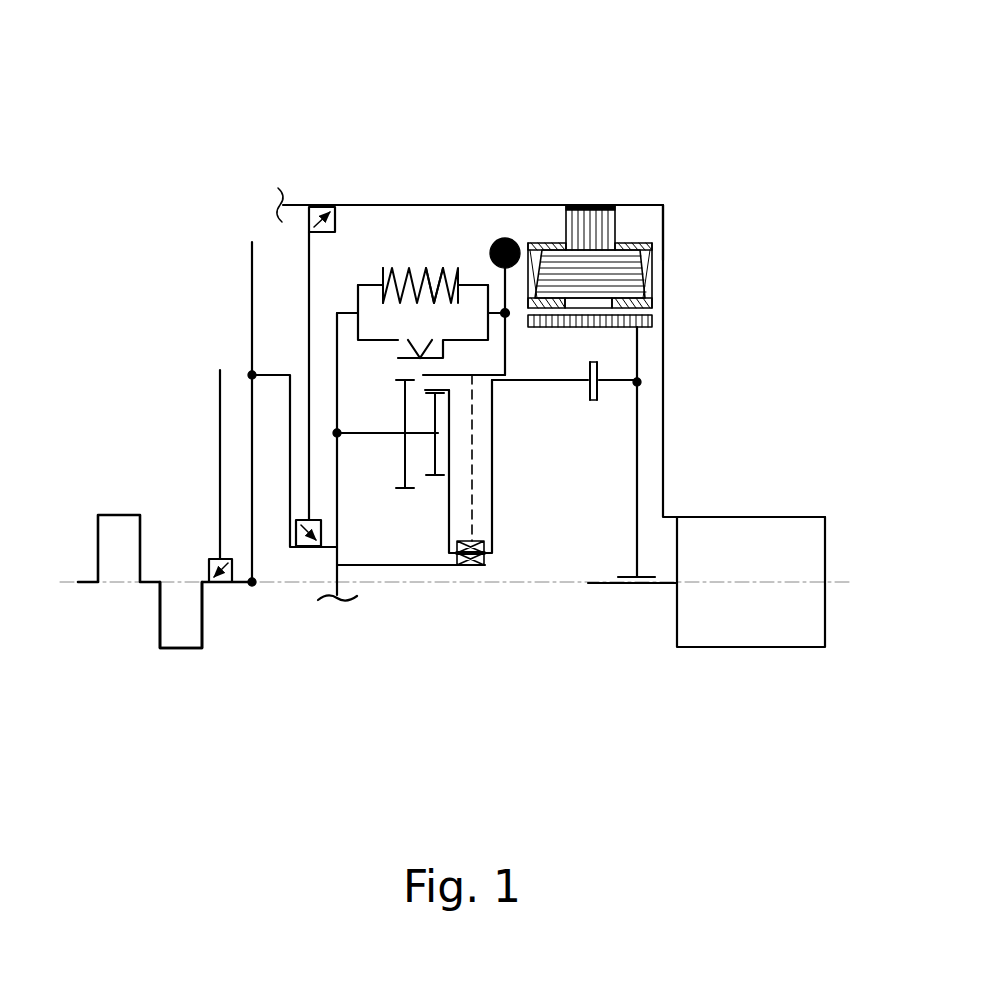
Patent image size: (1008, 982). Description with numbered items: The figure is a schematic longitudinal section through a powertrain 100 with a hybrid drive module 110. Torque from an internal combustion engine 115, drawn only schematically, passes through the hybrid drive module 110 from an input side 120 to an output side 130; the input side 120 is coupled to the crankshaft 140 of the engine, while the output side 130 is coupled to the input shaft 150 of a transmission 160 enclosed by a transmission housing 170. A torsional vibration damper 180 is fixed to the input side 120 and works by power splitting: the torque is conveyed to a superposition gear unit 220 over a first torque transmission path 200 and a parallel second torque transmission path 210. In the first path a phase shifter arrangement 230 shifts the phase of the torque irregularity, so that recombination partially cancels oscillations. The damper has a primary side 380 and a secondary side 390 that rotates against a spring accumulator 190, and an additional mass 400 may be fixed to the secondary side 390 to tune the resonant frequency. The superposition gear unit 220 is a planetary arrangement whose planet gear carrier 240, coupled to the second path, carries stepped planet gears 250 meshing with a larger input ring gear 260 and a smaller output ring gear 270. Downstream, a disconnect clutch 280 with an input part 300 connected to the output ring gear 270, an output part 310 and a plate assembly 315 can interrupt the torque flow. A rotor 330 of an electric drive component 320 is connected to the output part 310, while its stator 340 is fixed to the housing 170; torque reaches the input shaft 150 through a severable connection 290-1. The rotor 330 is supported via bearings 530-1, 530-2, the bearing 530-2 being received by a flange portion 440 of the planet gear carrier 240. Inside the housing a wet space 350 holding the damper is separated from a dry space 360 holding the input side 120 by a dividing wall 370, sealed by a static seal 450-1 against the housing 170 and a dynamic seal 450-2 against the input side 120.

The powertrain 100 is at (371, 722).
The hybrid drive module 110 is at (431, 216).
The internal combustion engine 115 is at (109, 486).
The input side 120 is at (252, 375).
The output side 130 is at (640, 382).
The crankshaft 140 is at (158, 648).
The transmission input shaft 150 is at (660, 585).
The transmission 160 is at (787, 542).
The transmission housing 170 is at (665, 448).
The torsional vibration damper 180 is at (413, 264).
The spring accumulator 190 is at (383, 266).
The first torque transmission path 200 is at (353, 298).
The second torque transmission path 210 is at (354, 440).
The superposition gear unit 220 is at (445, 512).
The phase shifter arrangement 230 is at (446, 254).
The planet gear carrier 240 is at (375, 435).
The planet gears 250 is at (420, 464).
The input ring gear 260 is at (423, 375).
The output ring gear 270 is at (405, 489).
The disconnect clutch 280 is at (593, 404).
The severable connection 290-1 is at (632, 585).
The input part 300 is at (588, 382).
The output part 310 is at (599, 380).
The plate assembly 315 is at (594, 362).
The electric drive component 320 is at (636, 238).
The rotor 330 is at (652, 322).
The stator 340 is at (588, 218).
The wet space 350 is at (656, 224).
The dry space 360 is at (268, 313).
The dividing wall 370 is at (307, 302).
The primary side 380 is at (365, 285).
The secondary side 390 is at (468, 284).
The additional mass 400 is at (507, 238).
The flange portion 440 is at (353, 567).
The static seal 450-1 is at (312, 206).
The dynamic seal 450-2 is at (298, 548).
The bearing 530-1 is at (478, 540).
The bearing 530-2 is at (472, 567).